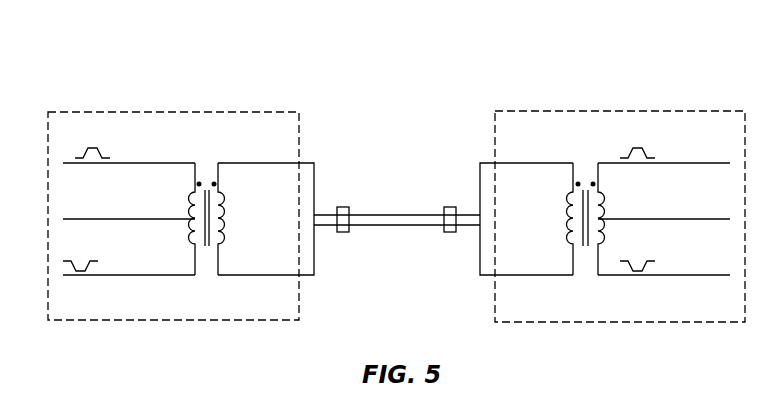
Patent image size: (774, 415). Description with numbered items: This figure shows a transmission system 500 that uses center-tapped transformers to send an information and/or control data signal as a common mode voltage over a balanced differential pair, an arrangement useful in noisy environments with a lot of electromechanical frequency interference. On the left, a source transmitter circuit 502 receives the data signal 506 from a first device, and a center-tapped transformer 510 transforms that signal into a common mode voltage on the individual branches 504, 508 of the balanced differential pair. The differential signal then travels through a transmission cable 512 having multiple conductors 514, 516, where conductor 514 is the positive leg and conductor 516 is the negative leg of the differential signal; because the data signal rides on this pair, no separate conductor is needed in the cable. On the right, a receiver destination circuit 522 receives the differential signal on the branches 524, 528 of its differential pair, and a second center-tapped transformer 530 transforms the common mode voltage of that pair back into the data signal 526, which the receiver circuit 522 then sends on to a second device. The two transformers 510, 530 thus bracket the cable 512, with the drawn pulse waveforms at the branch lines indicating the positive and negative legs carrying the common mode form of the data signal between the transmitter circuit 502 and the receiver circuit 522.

The transmission system 500 is at (245, 55).
The transmitter circuit 502 is at (170, 112).
The branch of balanced differential pair 504 is at (92, 165).
The information and/or control data signal 506 is at (140, 218).
The branch of balanced differential pair 508 is at (81, 277).
The center-tapped transformer 510 is at (266, 231).
The transmission cable 512 is at (414, 232).
The conductor 514 is at (386, 213).
The conductor 516 is at (387, 227).
The receiver circuit 522 is at (622, 112).
The branch of balanced differential pair 524 is at (641, 165).
The information and/or control data signal 526 is at (652, 218).
The branch of balanced differential pair 528 is at (641, 278).
The center-tapped transformer 530 is at (562, 229).